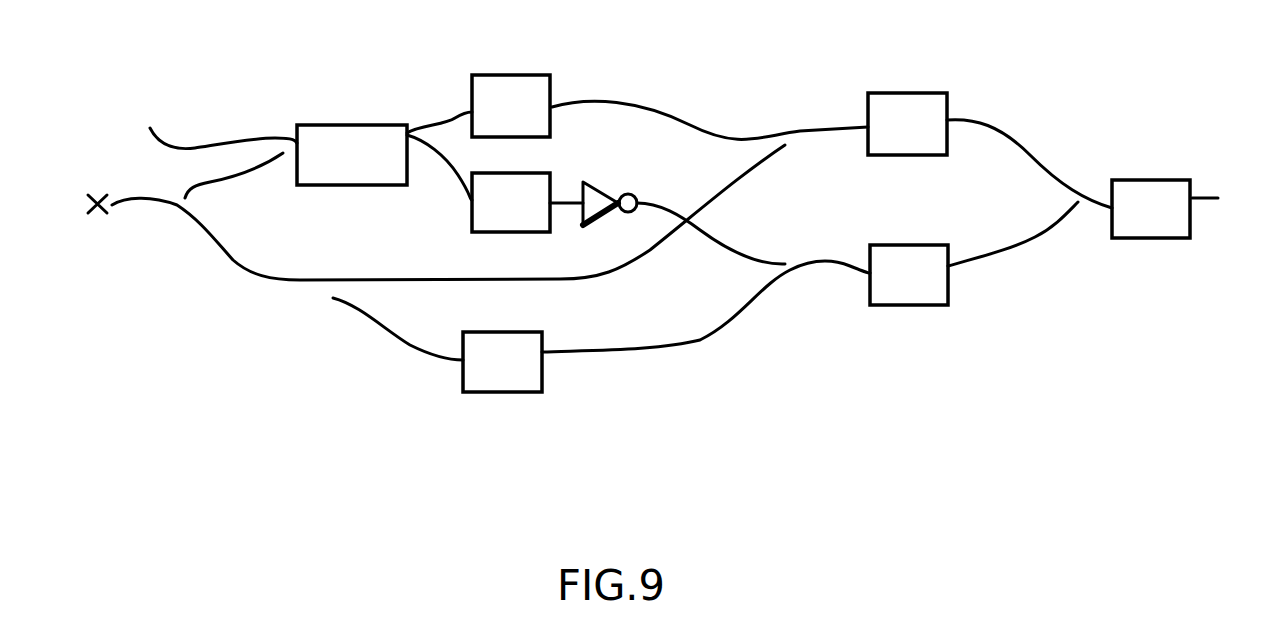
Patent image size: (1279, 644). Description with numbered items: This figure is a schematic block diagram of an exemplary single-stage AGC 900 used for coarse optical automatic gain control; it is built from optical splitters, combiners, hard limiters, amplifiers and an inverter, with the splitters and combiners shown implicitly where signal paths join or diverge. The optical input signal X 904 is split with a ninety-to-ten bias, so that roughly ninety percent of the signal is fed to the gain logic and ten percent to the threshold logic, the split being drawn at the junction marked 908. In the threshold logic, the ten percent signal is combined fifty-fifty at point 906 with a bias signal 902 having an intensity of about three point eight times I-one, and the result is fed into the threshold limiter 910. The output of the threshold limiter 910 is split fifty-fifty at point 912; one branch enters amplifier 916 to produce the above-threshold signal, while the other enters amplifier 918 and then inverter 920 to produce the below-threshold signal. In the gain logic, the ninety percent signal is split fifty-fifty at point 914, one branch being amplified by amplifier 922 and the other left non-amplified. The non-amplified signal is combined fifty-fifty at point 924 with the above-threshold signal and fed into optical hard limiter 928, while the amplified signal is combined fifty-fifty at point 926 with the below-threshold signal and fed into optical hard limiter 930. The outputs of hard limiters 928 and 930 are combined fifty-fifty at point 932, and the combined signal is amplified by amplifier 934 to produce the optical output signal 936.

The single-stage AGC 900 is at (683, 540).
The bias signal 902 is at (121, 105).
The optical input signal X 904 is at (91, 227).
The combining point 906 is at (250, 105).
The 90:10 coupler 908 is at (170, 248).
The threshold limiter 910 is at (348, 125).
The splitting point 912 is at (425, 88).
The splitting point 914 is at (333, 300).
The amplifier 916 is at (510, 70).
The amplifier 918 is at (468, 217).
The inverter 920 is at (582, 227).
The amplifier 922 is at (498, 393).
The combining point 924 is at (783, 100).
The combining point 926 is at (807, 317).
The optical hard limiter 928 is at (902, 92).
The optical hard limiter 930 is at (910, 307).
The combining point 932 is at (1078, 143).
The amplifier 934 is at (1145, 240).
The optical output signal 936 is at (1228, 201).